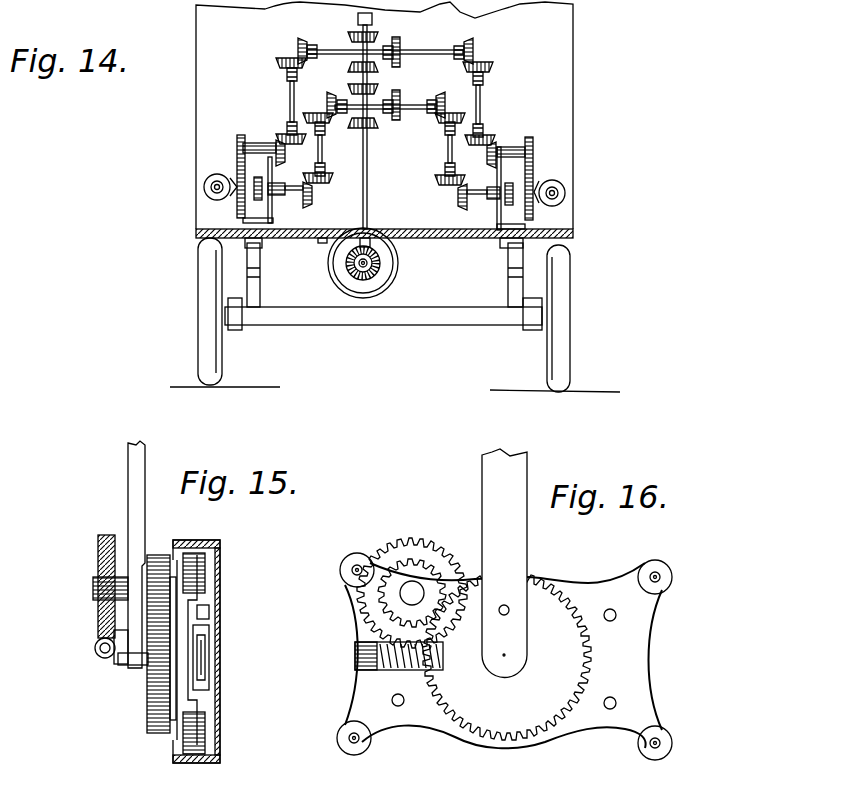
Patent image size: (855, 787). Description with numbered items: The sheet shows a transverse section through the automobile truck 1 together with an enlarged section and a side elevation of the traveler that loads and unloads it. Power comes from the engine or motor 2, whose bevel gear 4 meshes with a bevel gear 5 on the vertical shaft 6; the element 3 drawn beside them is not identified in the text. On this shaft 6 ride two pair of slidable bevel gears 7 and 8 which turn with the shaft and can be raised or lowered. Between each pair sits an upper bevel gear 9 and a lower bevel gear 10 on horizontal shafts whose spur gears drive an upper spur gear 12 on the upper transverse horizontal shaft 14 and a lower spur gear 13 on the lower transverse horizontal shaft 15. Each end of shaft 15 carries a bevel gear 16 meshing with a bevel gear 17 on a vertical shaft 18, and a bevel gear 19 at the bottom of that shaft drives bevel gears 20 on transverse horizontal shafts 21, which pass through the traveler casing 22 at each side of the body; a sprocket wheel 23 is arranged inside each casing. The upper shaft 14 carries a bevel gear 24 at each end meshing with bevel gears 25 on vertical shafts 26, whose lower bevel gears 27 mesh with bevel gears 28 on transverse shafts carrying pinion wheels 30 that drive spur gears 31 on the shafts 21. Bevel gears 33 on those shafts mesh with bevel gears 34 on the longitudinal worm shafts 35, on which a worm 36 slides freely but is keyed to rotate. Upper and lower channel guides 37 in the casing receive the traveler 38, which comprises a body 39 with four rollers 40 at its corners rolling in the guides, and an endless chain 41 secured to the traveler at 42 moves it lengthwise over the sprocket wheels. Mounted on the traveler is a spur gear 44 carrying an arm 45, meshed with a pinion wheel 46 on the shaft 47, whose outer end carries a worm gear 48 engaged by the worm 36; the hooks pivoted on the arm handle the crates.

In FIG. 14, the automobile truck 1 is at (578, 62).
In FIG. 14, the engine or motor 2 is at (330, 243).
In FIG. 14, the wheel 3 is at (384, 263).
In FIG. 14, the bevel gear 4 is at (378, 276).
In FIG. 14, the bevel gear 5 is at (347, 255).
In FIG. 14, the vertical shaft 6 is at (368, 205).
In FIG. 14, the slidable bevel gear 7 is at (376, 125).
In FIG. 14, the slidable bevel gear 8 is at (354, 34).
In FIG. 14, the upper bevel gear 9 is at (395, 42).
In FIG. 14, the lower bevel gear 10 is at (380, 122).
In FIG. 14, the upper spur gear 12 is at (400, 46).
In FIG. 14, the lower spur gear 13 is at (399, 96).
In FIG. 14, the upper transverse horizontal shaft 14 is at (432, 52).
In FIG. 14, the lower transverse horizontal shaft 15 is at (422, 108).
In FIG. 14, the bevel gear 16 is at (333, 96).
In FIG. 14, the bevel gear 17 is at (327, 103).
In FIG. 14, the vertical shaft 18 is at (322, 152).
In FIG. 14, the bevel gear 19 is at (332, 180).
In FIG. 14, the bevel gear 20 is at (313, 202).
In FIG. 14, the transverse horizontal shaft 21 is at (297, 198).
In FIG. 14, the traveler casing 22 is at (276, 240).
In FIG. 14, the sprocket wheel 23 is at (206, 252).
In FIG. 14, the bevel gear 24 is at (300, 44).
In FIG. 14, the bevel gear 25 is at (282, 62).
In FIG. 14, the vertical shaft 26 is at (289, 100).
In FIG. 14, the bevel gear 27 is at (285, 132).
In FIG. 14, the bevel gear 28 is at (262, 142).
In FIG. 14, the pinion wheel 30 is at (237, 140).
In FIG. 14, the spur gear 31 is at (237, 216).
In FIG. 14, the bevel gear 33 is at (210, 178).
In FIG. 14, the bevel gear 34 is at (208, 187).
In FIG. 14, the longitudinal horizontal worm shaft 35 is at (216, 190).
In FIG. 16, the worm 36 is at (420, 672).
In FIG. 14, the channel guide 37 is at (268, 162).
In FIG. 15, the traveler 38 is at (178, 736).
In FIG. 16, the traveler 38 is at (640, 662).
In FIG. 15, the body 39 is at (207, 600).
In FIG. 16, the body 39 is at (646, 700).
In FIG. 15, the roller 40 is at (190, 566).
In FIG. 16, the roller 40 is at (350, 562).
In FIG. 15, the endless chain 41 is at (210, 688).
In FIG. 15, the chain attachment point 42 is at (207, 616).
In FIG. 15, the spur gear 44 is at (150, 710).
In FIG. 16, the spur gear 44 is at (550, 612).
In FIG. 15, the arm 45 is at (131, 466).
In FIG. 16, the arm 45 is at (512, 560).
In FIG. 15, the pinion wheel 46 is at (158, 556).
In FIG. 16, the pinion wheel 46 is at (422, 568).
In FIG. 15, the shaft 47 is at (118, 576).
In FIG. 16, the shaft 47 is at (406, 598).
In FIG. 15, the worm gear 48 is at (100, 550).
In FIG. 16, the worm gear 48 is at (391, 556).